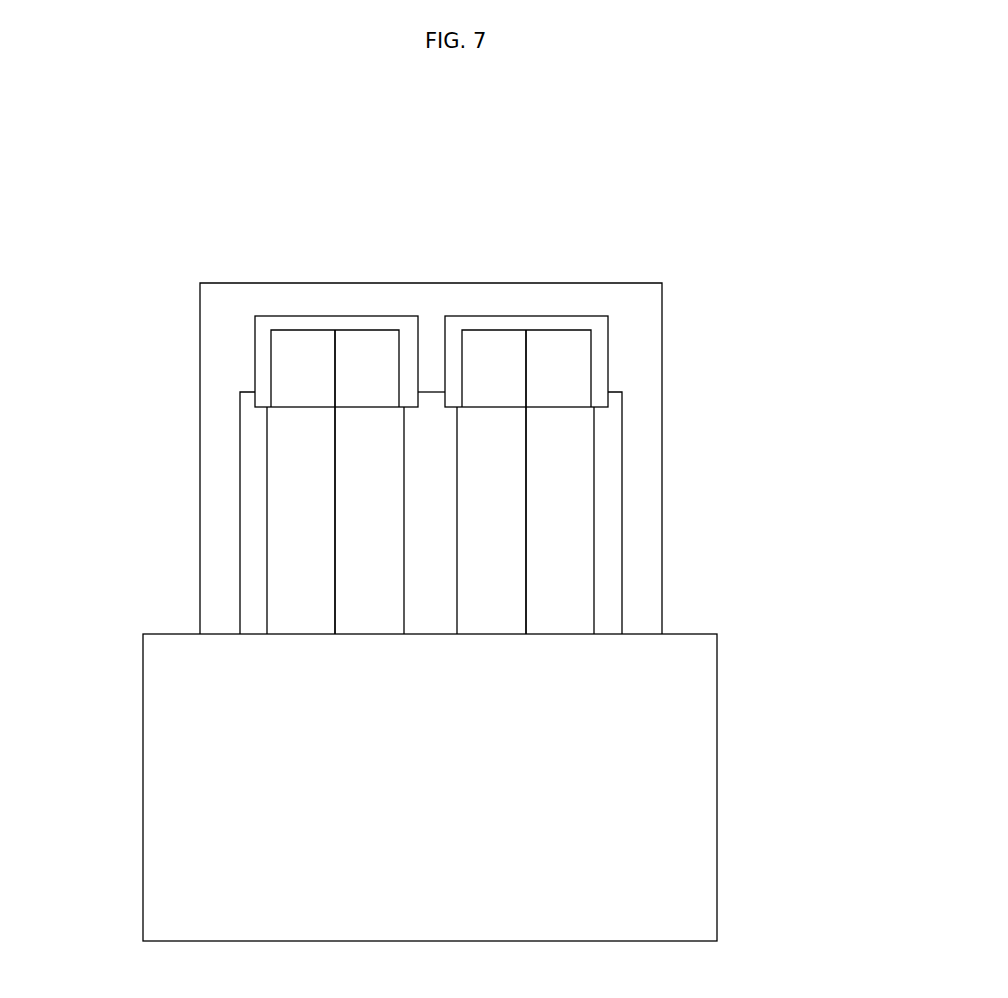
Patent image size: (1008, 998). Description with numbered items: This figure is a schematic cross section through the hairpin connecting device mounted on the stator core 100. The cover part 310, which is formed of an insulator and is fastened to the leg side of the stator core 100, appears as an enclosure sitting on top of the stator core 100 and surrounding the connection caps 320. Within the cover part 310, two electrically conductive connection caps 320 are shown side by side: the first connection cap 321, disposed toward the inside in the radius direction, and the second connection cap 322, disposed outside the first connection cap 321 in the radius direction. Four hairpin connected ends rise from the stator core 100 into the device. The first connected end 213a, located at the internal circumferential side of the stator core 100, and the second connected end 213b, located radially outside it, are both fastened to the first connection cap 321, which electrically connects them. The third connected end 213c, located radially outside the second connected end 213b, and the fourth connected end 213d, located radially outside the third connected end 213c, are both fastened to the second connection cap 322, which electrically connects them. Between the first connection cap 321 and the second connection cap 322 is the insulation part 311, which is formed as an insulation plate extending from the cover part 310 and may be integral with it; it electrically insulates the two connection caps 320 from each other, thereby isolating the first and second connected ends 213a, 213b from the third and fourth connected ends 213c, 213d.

The stator core 100 is at (682, 683).
The cover part 310 is at (663, 397).
The insulation part 311 is at (430, 358).
The connection cap 320 is at (574, 283).
The first connection cap 321 is at (557, 323).
The second connection cap 322 is at (387, 323).
The first connected end 213a is at (552, 395).
The second connected end 213b is at (490, 395).
The third connected end 213c is at (370, 395).
The fourth connected end 213d is at (307, 395).